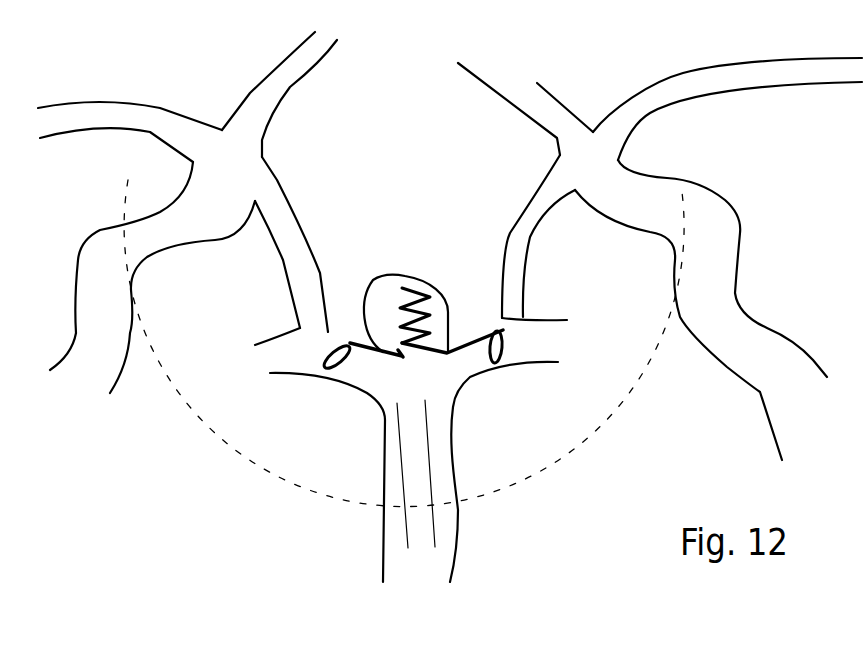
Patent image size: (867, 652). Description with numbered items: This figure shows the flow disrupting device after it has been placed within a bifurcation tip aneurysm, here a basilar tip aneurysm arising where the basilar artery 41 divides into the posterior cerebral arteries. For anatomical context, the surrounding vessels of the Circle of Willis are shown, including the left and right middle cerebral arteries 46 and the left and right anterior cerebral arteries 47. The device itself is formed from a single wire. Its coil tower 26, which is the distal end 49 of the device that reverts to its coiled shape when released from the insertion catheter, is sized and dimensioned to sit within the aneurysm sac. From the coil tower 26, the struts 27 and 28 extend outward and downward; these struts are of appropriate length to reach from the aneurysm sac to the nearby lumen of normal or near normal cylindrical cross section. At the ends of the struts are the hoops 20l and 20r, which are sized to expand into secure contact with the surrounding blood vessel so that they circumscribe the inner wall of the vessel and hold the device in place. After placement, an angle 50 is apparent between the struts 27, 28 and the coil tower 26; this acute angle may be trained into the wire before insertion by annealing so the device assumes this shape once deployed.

The left hoop 20l is at (323, 354).
The right hoop 20r is at (505, 343).
The coil tower 26 is at (410, 284).
The strut 27 is at (380, 357).
The strut 28 is at (467, 357).
The basilar artery 41 is at (457, 478).
The middle cerebral arteries 46 is at (108, 96).
The anterior cerebral arteries 47 is at (293, 43).
The distal end of the device 49 is at (402, 290).
The angle 50 is at (460, 335).